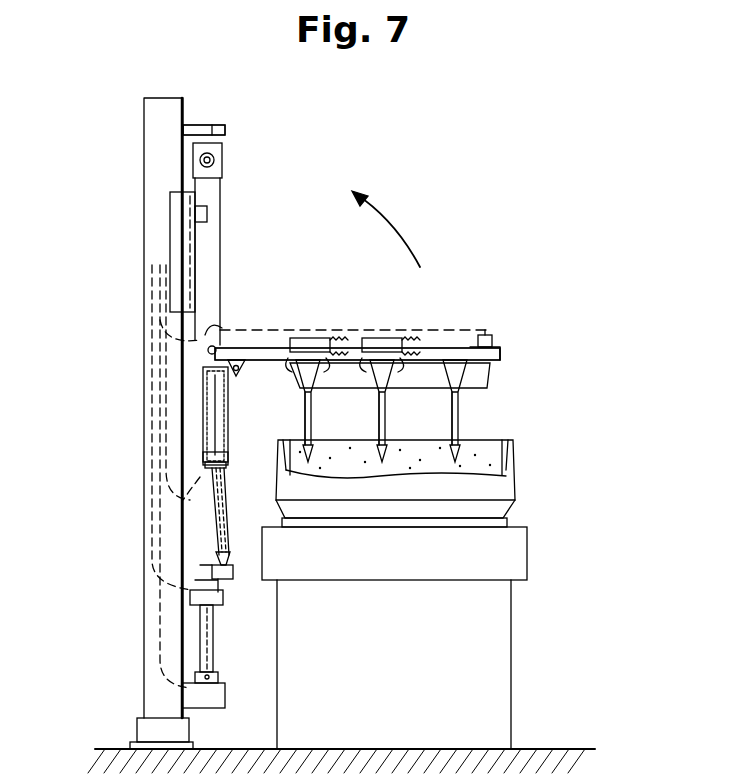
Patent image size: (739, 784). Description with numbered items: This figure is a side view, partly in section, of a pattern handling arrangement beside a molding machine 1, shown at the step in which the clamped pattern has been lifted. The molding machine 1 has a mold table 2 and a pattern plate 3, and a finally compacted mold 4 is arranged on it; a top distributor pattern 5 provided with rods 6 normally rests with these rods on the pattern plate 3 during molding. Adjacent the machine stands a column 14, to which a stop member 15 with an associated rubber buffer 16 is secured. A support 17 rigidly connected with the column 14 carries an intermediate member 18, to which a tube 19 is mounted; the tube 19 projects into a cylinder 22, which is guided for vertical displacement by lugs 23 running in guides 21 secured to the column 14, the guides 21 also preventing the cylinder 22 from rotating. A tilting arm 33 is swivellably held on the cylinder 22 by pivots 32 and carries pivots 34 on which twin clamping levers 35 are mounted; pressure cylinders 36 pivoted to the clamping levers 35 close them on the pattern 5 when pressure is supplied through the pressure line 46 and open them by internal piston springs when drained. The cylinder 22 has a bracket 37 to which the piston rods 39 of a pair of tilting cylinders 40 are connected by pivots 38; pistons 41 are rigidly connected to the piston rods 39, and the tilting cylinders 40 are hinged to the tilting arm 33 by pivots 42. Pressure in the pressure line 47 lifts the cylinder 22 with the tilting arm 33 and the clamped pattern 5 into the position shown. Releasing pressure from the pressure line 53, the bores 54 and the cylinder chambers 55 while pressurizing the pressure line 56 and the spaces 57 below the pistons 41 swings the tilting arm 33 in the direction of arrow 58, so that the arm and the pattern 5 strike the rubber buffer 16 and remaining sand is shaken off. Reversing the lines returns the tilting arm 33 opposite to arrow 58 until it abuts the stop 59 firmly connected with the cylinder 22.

The molding machine 1 is at (480, 641).
The mold table 2 is at (518, 568).
The pattern plate 3 is at (510, 522).
The finally compacted mold 4 is at (493, 484).
The top distributor pattern 5 is at (486, 385).
The rods 6 is at (311, 411).
The column 14 is at (160, 702).
The stop member 15 is at (200, 125).
The rubber buffer 16 is at (225, 131).
The support 17 is at (205, 698).
The intermediate member 18 is at (218, 676).
The tube 19 is at (214, 634).
The guides 21 is at (176, 212).
The cylinder 22 is at (211, 245).
The lugs 23 is at (206, 213).
The pivots 32 is at (236, 374).
The tilting arm 33 is at (428, 350).
The pivots 34 is at (302, 368).
The twin clamping levers 35 is at (286, 364).
The pressure cylinders 36 is at (302, 338).
The bracket 37 is at (226, 579).
The pivots 38 is at (226, 556).
The piston rods 39 is at (227, 519).
The tilting cylinders 40 is at (229, 430).
The pistons 41 is at (229, 455).
The pivots 42 is at (208, 355).
The pressure line 46 is at (258, 330).
The pressure line 47 is at (152, 608).
The pressure line 53 is at (152, 527).
The bores 54 is at (226, 496).
The cylinder chambers 55 is at (216, 411).
The pressure line 56 is at (160, 430).
The spaces 57 is at (228, 466).
The arrow 58 is at (397, 228).
The stop 59 is at (215, 345).